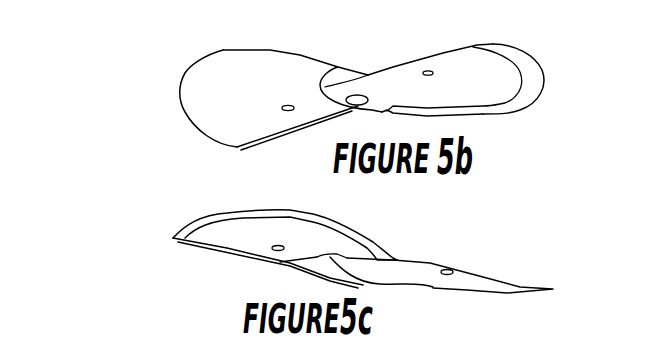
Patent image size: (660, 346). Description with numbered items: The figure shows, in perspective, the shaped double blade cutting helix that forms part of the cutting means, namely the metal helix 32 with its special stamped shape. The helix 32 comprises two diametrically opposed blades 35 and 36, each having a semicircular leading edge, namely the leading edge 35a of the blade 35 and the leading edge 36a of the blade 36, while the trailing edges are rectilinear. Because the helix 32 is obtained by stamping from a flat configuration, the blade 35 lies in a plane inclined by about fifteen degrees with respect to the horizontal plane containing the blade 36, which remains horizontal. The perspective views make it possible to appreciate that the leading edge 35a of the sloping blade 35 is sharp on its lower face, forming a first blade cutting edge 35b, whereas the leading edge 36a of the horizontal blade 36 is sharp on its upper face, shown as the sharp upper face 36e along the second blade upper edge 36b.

In FIG. 5B, the metal helix 32 is at (363, 50).
In FIG. 5C, the metal helix 32 is at (407, 228).
In FIG. 5B, the blade 35 is at (246, 97).
In FIG. 5C, the blade 35 is at (473, 280).
In FIG. 5B, the leading edge 35a is at (222, 50).
In FIG. 5B, the first blade cutting edge 35b is at (261, 141).
In FIG. 5B, the blade 36 is at (484, 83).
In FIG. 5C, the blade 36 is at (261, 231).
In FIG. 5B, the leading edge 36a is at (518, 106).
In FIG. 5C, the leading edge 36a is at (276, 212).
In FIG. 5B, the second blade upper edge 36b is at (445, 55).
In FIG. 5B, the sharp upper face 36e is at (485, 106).